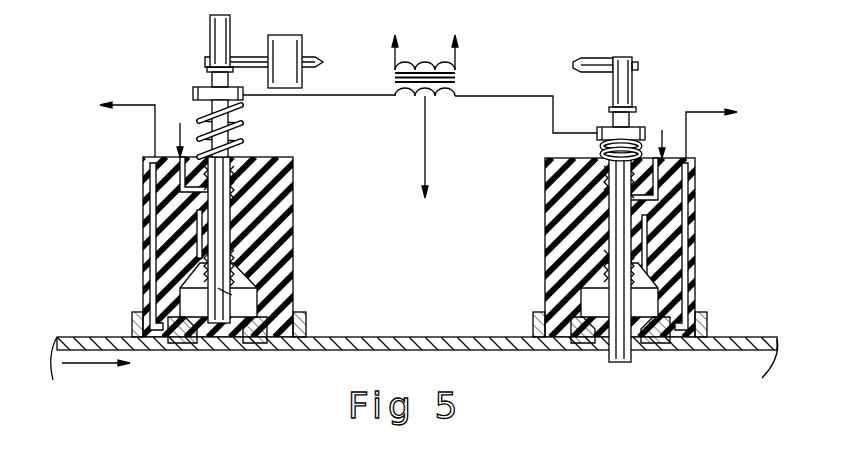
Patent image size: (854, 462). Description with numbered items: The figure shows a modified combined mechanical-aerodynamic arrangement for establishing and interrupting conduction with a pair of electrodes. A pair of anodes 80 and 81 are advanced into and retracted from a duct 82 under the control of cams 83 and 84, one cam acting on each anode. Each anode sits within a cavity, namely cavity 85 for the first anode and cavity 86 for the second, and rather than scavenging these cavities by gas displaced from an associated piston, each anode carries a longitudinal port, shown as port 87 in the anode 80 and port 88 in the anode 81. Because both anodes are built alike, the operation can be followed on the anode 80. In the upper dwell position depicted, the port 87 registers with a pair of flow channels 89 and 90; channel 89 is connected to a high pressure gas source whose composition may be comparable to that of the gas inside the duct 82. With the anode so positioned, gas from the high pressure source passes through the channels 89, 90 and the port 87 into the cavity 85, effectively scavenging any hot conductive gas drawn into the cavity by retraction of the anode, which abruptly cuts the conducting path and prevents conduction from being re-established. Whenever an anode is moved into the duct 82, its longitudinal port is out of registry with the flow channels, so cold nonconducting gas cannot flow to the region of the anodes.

The anode 80 is at (236, 300).
The anode 81 is at (626, 359).
The duct 82 is at (334, 337).
The cam 83 is at (231, 21).
The cam 84 is at (613, 84).
The cavity 85 is at (185, 281).
The cavity 86 is at (598, 283).
The longitudinal port 87 is at (209, 199).
The longitudinal port 88 is at (645, 227).
The flow channel 89 is at (191, 195).
The flow channel 90 is at (199, 252).